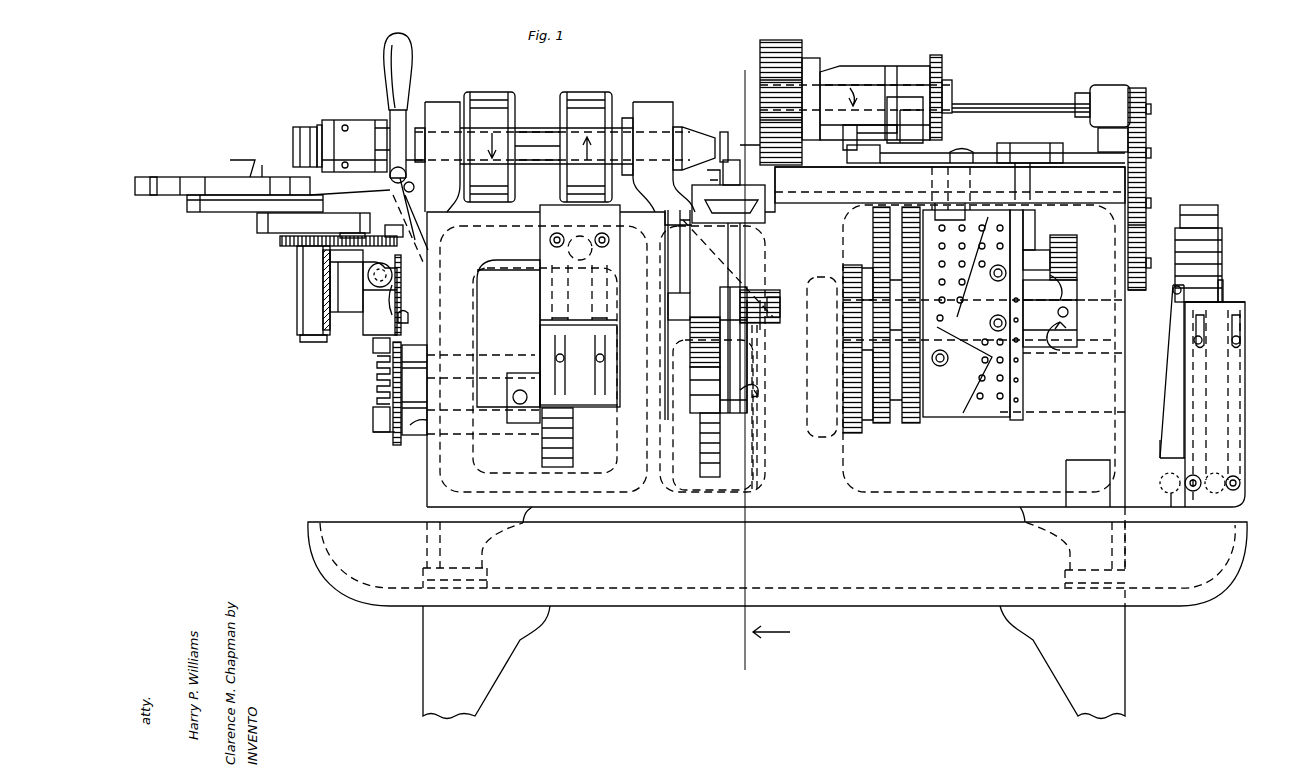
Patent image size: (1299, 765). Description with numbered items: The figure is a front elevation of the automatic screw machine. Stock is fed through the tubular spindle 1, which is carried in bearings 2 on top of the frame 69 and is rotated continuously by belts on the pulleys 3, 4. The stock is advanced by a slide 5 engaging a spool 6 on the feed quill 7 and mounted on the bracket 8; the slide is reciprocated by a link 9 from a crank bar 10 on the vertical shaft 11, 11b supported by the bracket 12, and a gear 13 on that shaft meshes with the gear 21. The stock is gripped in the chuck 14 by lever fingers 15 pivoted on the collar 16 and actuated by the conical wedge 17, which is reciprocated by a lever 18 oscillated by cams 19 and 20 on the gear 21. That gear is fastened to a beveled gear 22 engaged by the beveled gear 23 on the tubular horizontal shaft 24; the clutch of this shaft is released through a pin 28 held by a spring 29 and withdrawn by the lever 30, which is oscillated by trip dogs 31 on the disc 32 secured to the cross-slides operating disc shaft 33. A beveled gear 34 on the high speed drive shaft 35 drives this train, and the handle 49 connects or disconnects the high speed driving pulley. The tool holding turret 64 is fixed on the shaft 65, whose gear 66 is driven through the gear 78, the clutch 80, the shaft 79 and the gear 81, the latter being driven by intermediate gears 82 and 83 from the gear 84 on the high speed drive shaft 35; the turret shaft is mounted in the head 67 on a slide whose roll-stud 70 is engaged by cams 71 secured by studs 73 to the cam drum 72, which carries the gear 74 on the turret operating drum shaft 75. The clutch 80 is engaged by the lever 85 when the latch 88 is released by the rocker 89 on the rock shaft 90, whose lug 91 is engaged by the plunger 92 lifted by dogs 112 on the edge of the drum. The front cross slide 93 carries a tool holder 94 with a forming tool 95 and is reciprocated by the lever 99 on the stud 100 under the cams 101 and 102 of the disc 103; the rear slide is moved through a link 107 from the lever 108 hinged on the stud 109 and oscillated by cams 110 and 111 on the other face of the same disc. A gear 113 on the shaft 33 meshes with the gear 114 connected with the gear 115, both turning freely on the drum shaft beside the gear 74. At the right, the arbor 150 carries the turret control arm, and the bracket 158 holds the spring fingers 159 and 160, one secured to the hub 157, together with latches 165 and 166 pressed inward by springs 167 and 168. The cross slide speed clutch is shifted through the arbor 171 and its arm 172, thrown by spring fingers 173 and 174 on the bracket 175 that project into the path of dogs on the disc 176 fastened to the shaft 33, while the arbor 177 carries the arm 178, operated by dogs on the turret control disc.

The tubular spindle 1 is at (546, 146).
The bearings 2 is at (560, 157).
The pulley 3 is at (489, 147).
The pulley 4 is at (586, 147).
The slide 5 is at (215, 177).
The spool 6 is at (293, 135).
The feed quill 7 is at (320, 124).
The bracket 8 is at (150, 195).
The link 9 is at (235, 212).
The crank bar 10 is at (313, 223).
The vertical shaft 11 is at (751, 370).
The post 11b is at (297, 280).
The bracket 12 is at (297, 307).
The gear 13 is at (280, 242).
The chuck 14 is at (702, 127).
The lever fingers 15 is at (367, 120).
The collar 16 is at (345, 120).
The conical wedge 17 is at (373, 141).
The lever 18 is at (350, 186).
The cam 19 is at (352, 233).
The cam 20 is at (389, 224).
The gear 21 is at (350, 262).
The beveled gear 22 is at (400, 256).
The beveled gear 23 is at (395, 290).
The tubular horizontal shaft 24 is at (395, 275).
The pin 28 is at (373, 400).
The spring 29 is at (373, 410).
The lever 30 is at (390, 344).
The trip dogs 31 is at (377, 364).
The disc 32 is at (393, 443).
The cross-slides operating disc shaft 33 is at (510, 398).
The beveled gear 34 is at (401, 300).
The high speed drive shaft 35 is at (508, 333).
The handle 49 is at (380, 58).
The tool holding turret 64 is at (785, 40).
The shaft 65 is at (897, 95).
The gear 66 is at (942, 70).
The head 67 is at (863, 66).
The frame 69 is at (950, 185).
The roll-stud 70 is at (948, 180).
The cams 71 is at (968, 417).
The cam drum 72 is at (1012, 420).
The studs 73 is at (953, 359).
The gear 74 is at (912, 423).
The turret operating drum shaft 75 is at (1065, 352).
The gear 78 is at (426, 157).
The shaft 79 is at (1012, 104).
The clutch 80 is at (948, 80).
The gear 81 is at (1146, 95).
The intermediate gear 82 is at (1146, 133).
The intermediate gear 83 is at (1146, 185).
The gear 84 is at (1146, 240).
The lever 85 is at (940, 145).
The latch 88 is at (920, 110).
The rocker 89 is at (861, 119).
The rock shaft 90 is at (962, 150).
The lug 91 is at (1030, 143).
The plunger 92 is at (1030, 180).
The front cross slide 93 is at (718, 196).
The tool holder 94 is at (740, 175).
The forming tool 95 is at (727, 131).
The lever 99 is at (740, 248).
The stud 100 is at (770, 290).
The cam 101 is at (760, 340).
The cam 102 is at (745, 430).
The disc 103 is at (700, 462).
The link 107 is at (668, 300).
The lever 108 is at (680, 263).
The stud 109 is at (645, 315).
The cam 110 is at (690, 372).
The cam 111 is at (690, 345).
The dogs 112 is at (1040, 240).
The gear 113 is at (865, 433).
The gear 114 is at (843, 272).
The gear 115 is at (880, 423).
The arbor 150 is at (1215, 483).
The circular hub 157 is at (1225, 300).
The bracket 158 is at (1118, 487).
The spring finger 159 is at (1245, 392).
The spring finger 160 is at (1183, 448).
The latch 165 is at (1238, 302).
The latch 166 is at (1222, 270).
The spring 167 is at (1240, 338).
The spring 168 is at (1194, 340).
The arbor 171 is at (580, 306).
The arm 172 is at (550, 292).
The spring finger 173 is at (610, 312).
The spring finger 174 is at (550, 313).
The bracket 175 is at (540, 340).
The disc 176 is at (542, 462).
The arbor 177 is at (1172, 507).
The arm 178 is at (1166, 413).